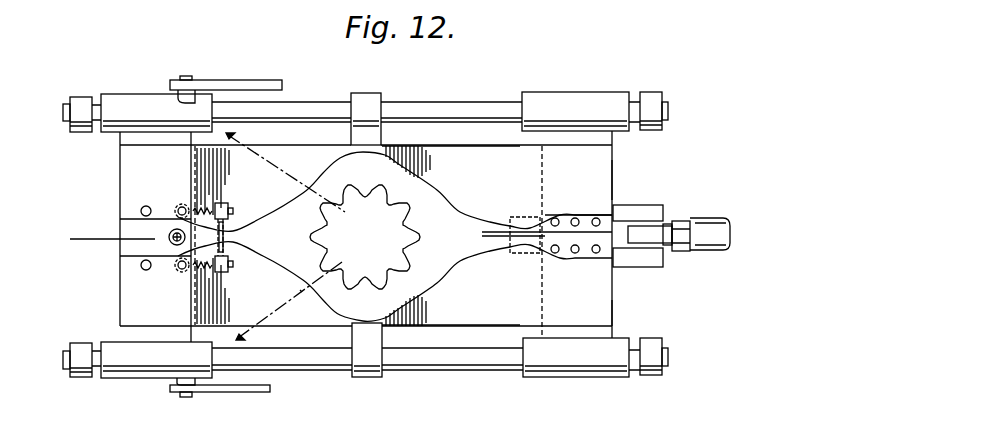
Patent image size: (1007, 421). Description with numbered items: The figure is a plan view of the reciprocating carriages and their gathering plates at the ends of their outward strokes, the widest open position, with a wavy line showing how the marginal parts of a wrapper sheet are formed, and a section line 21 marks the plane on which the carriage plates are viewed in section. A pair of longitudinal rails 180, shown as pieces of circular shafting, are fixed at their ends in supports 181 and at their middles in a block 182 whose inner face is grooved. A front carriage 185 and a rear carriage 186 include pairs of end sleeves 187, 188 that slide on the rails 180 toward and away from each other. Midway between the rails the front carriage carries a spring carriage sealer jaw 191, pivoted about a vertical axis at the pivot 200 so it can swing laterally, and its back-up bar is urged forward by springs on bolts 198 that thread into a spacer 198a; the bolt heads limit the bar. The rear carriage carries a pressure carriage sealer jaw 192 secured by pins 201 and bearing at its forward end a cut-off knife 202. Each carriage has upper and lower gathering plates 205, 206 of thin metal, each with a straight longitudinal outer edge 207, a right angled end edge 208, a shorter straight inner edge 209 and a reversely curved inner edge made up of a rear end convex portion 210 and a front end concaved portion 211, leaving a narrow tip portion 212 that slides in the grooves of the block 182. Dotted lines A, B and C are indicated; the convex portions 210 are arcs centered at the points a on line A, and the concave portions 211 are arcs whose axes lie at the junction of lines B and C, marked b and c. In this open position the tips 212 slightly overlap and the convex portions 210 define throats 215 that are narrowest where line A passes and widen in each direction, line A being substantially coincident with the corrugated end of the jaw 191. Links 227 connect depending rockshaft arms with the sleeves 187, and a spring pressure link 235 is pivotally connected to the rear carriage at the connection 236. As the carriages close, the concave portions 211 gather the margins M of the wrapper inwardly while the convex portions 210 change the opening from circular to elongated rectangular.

The section line 21 is at (88, 205).
The longitudinal rails 180 is at (446, 103).
The supports 181 is at (86, 96).
The block 182 is at (370, 85).
The front carriage 185 is at (118, 297).
The rear carriage 186 is at (613, 177).
The end sleeves 187 is at (127, 86).
The end sleeves 188 is at (572, 94).
The spring carriage sealer jaw 191 is at (132, 248).
The pressure carriage sealer jaw 192 is at (616, 210).
The bolt 198 is at (231, 210).
The spacer 198a is at (180, 207).
The pivot 200 is at (176, 250).
The pins 201 is at (596, 254).
The cut-off knife 202 is at (522, 232).
The upper gathering plates 205 is at (291, 158).
The lower gathering plates 206 is at (474, 145).
The straight longitudinal outer edge 207 is at (466, 326).
The right angled end edge 208 is at (612, 312).
The shorter straight inner edge 209 is at (575, 214).
The rear end convex portion 210 is at (503, 254).
The front end concaved portion 211 is at (424, 294).
The tip portion 212 is at (396, 289).
The throats 215 is at (231, 238).
The links 227 is at (242, 70).
The spring pressure link 235 is at (712, 252).
The pivotal connection 236 is at (665, 215).
The center points a is at (285, 237).
The axis point b is at (367, 234).
The axis point c is at (366, 240).
The dotted line A is at (229, 190).
The dotted line B is at (284, 225).
The dotted line C is at (289, 317).
The margins M is at (405, 228).